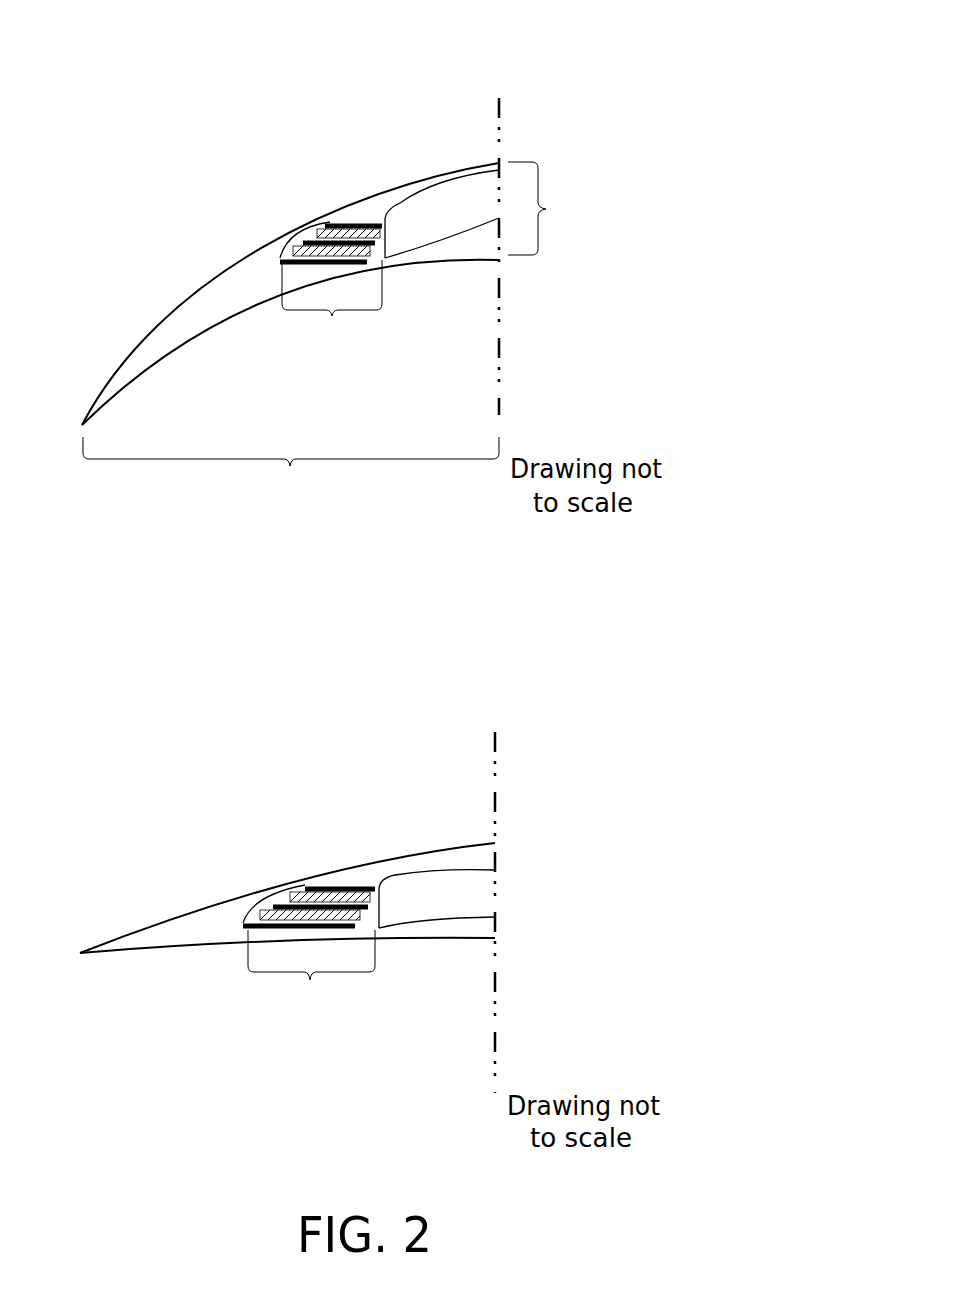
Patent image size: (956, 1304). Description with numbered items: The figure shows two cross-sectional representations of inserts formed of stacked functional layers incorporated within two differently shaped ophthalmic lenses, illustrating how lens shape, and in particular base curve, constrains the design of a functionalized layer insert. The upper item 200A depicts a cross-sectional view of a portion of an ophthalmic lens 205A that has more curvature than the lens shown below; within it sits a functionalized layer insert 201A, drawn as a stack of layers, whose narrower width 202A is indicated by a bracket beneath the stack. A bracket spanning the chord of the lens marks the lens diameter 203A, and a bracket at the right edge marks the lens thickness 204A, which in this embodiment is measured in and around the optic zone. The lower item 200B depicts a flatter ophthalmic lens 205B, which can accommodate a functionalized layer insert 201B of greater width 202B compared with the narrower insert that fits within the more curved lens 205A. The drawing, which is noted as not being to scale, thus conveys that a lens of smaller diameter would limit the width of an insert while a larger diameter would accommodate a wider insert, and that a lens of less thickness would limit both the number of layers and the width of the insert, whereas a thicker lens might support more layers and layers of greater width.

The cross sectional view of a portion of an ophthalmic lens 200A is at (195, 250).
The functionalized layer insert 201A is at (350, 217).
The width of functionalized layer insert 202A is at (333, 328).
The lens diameter 203A is at (291, 474).
The lens thickness 204A is at (551, 206).
The ophthalmic lens 205A is at (457, 168).
The cross sectional view of a portion of an ophthalmic lens 200B is at (203, 880).
The functionalized layer insert 201B is at (348, 882).
The width of functionalized layer insert 202B is at (307, 990).
The ophthalmic lens 205B is at (460, 845).